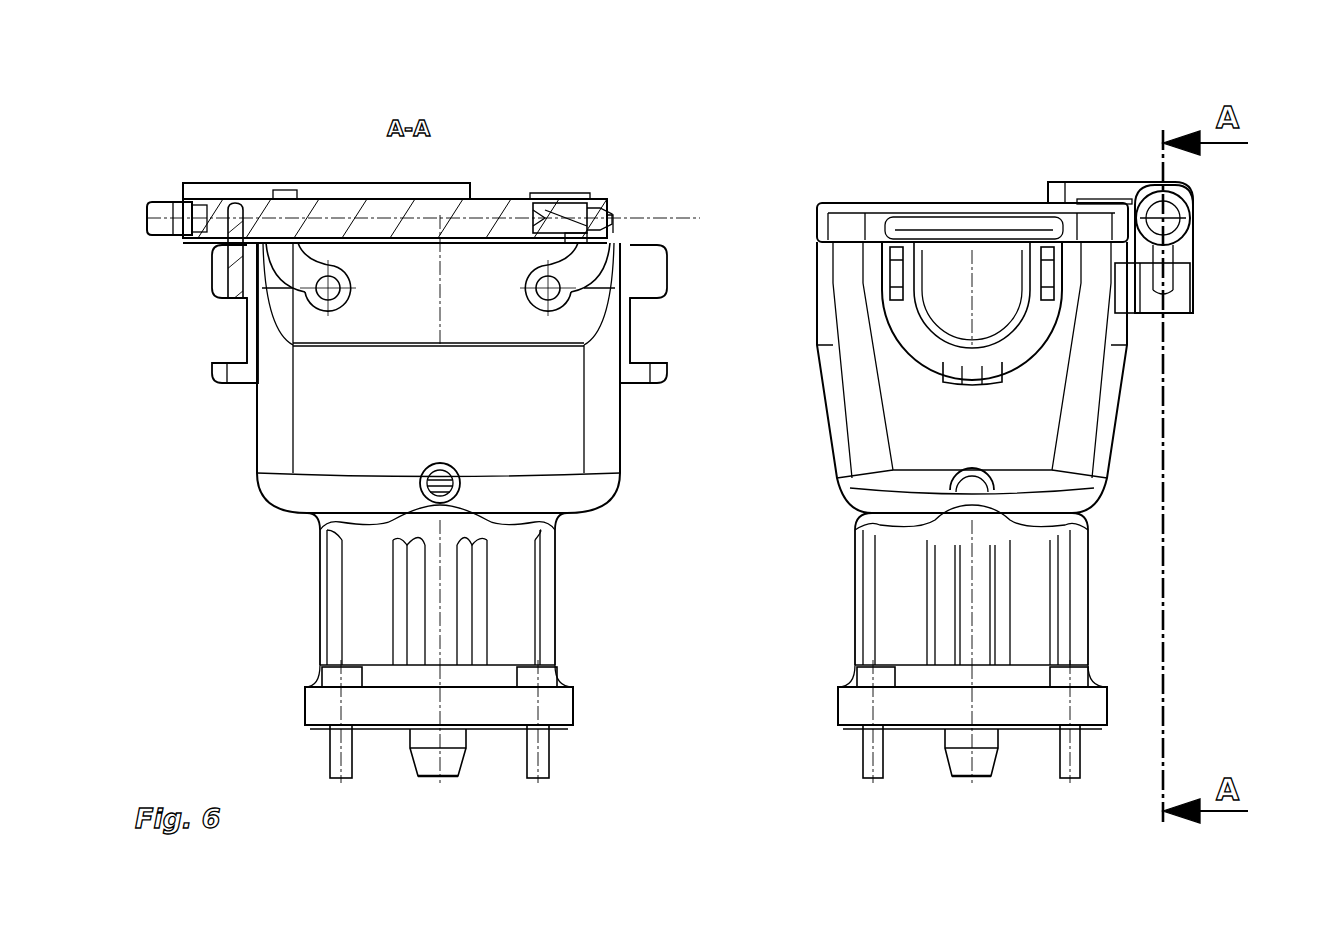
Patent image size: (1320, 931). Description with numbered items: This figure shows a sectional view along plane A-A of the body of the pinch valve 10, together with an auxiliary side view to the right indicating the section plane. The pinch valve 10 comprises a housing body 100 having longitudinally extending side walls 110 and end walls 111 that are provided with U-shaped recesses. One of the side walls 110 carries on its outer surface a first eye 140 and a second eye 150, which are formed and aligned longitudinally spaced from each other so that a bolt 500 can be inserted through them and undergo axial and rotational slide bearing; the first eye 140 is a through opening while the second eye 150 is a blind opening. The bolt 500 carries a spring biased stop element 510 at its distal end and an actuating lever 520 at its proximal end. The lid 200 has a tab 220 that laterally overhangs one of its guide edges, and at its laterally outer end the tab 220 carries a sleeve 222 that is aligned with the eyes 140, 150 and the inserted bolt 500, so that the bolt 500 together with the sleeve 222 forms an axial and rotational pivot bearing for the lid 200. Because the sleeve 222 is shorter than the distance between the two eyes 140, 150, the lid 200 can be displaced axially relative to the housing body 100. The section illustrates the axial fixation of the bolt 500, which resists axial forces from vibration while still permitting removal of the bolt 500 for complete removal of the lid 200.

The pinch valve 10 is at (815, 133).
The housing body 100 is at (815, 517).
The side walls 110 is at (490, 393).
The end walls 111 is at (257, 438).
The first eye 140 is at (263, 197).
The second eye 150 is at (613, 234).
The lid 200 is at (868, 211).
The tab 220 is at (263, 181).
The sleeve 222 is at (373, 193).
The bolt 500 is at (447, 217).
The spring biased stop element 510 is at (612, 214).
The actuating lever 520 is at (233, 257).